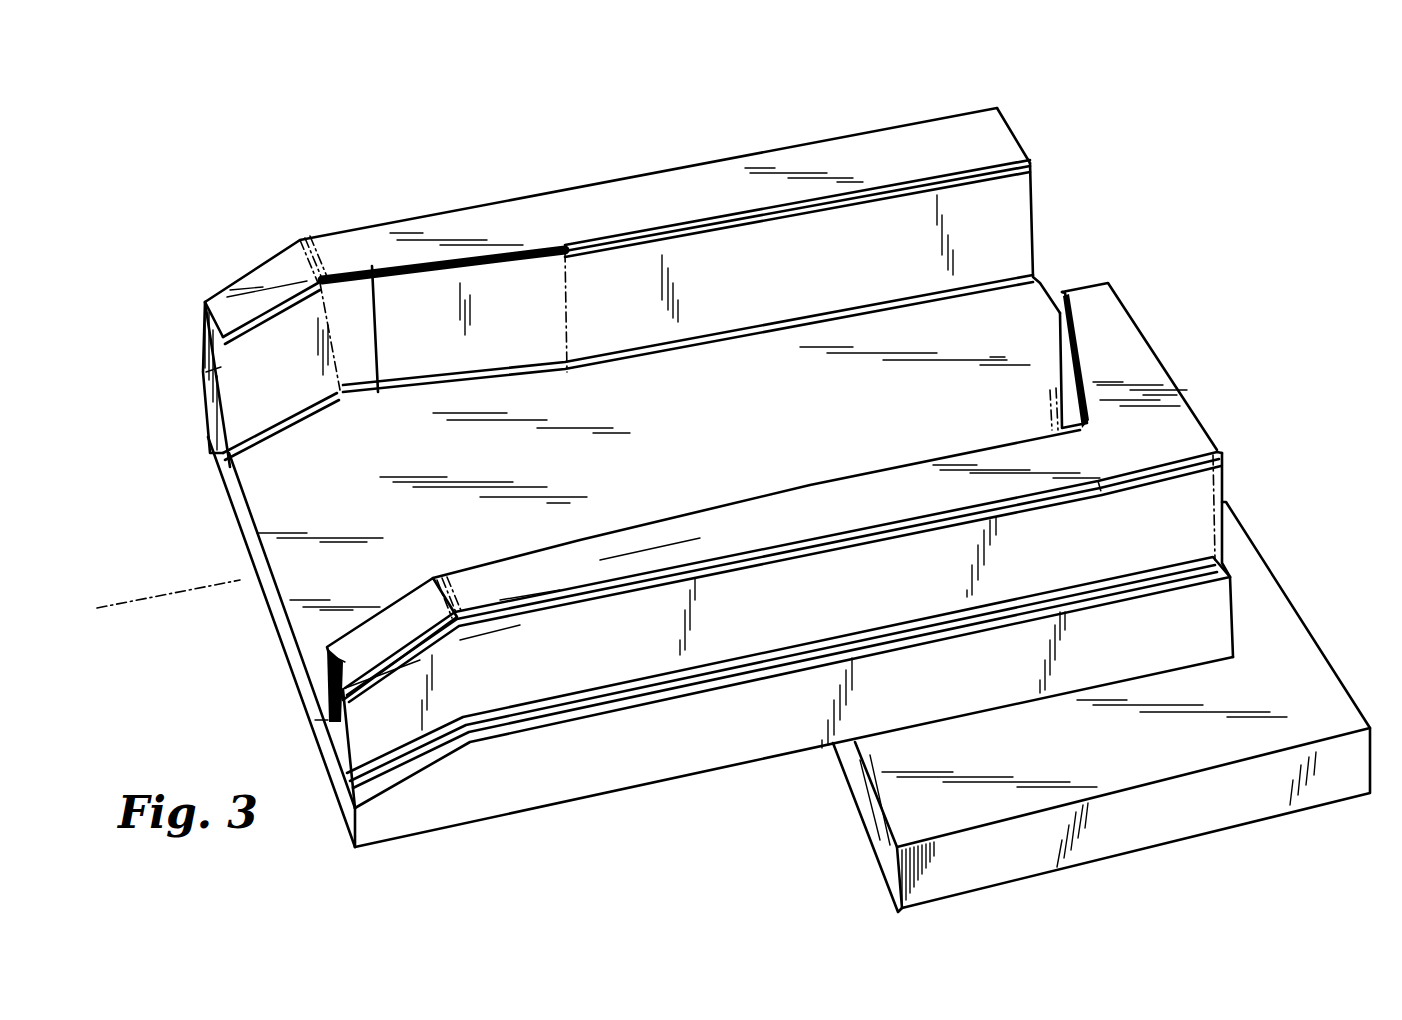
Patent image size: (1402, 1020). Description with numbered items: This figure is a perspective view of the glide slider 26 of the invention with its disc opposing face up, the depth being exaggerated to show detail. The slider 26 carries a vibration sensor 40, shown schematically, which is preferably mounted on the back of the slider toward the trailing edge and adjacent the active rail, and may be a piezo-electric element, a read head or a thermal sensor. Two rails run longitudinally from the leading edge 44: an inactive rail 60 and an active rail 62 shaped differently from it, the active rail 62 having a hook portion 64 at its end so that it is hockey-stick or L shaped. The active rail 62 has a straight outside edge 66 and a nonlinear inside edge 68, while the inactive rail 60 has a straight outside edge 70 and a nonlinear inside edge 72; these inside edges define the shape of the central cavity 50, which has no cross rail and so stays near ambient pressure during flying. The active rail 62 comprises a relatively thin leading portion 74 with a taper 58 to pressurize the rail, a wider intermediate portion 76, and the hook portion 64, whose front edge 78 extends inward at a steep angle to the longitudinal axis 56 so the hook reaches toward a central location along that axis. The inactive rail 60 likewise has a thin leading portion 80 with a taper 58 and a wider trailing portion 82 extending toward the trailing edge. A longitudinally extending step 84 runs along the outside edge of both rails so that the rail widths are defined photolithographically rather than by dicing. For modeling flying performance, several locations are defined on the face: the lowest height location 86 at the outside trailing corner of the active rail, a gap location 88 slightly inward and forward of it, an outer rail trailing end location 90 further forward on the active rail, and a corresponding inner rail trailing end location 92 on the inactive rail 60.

The glide slider 26 is at (372, 145).
The vibration sensor 40 is at (1277, 655).
The leading edge 44 is at (258, 552).
The central cavity 50 is at (420, 458).
The longitudinal axis 56 is at (148, 603).
The taper 58 is at (262, 270).
The inactive rail 60 is at (531, 222).
The active rail 62 is at (500, 585).
The hook portion 64 is at (1120, 373).
The outside edge 66 is at (638, 582).
The inside edge 68 is at (580, 542).
The outside edge 70 is at (657, 165).
The inside edge 72 is at (725, 215).
The leading portion 74 is at (530, 582).
The intermediate portion 76 is at (825, 517).
The front edge 78 is at (1083, 300).
The leading portion 80 is at (372, 250).
The trailing portion 82 is at (848, 155).
The longitudinally extending step 84 is at (753, 675).
The lowest height location 86 is at (1220, 455).
The gap location 88 is at (1182, 425).
The outer rail trailing end location 90 is at (1163, 432).
The inner rail trailing end location 92 is at (1000, 143).